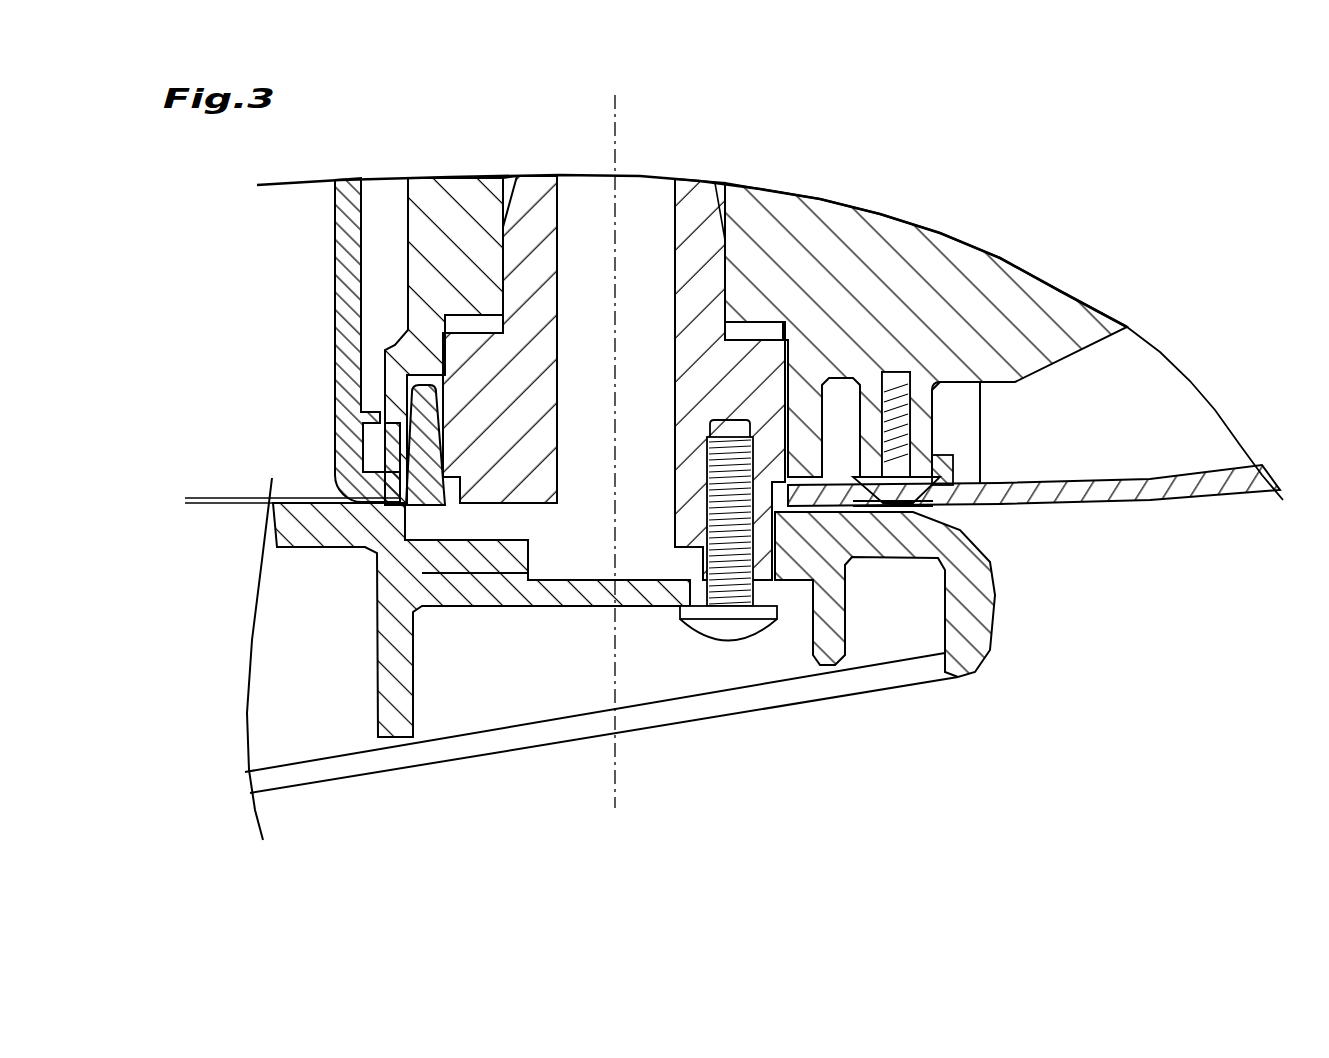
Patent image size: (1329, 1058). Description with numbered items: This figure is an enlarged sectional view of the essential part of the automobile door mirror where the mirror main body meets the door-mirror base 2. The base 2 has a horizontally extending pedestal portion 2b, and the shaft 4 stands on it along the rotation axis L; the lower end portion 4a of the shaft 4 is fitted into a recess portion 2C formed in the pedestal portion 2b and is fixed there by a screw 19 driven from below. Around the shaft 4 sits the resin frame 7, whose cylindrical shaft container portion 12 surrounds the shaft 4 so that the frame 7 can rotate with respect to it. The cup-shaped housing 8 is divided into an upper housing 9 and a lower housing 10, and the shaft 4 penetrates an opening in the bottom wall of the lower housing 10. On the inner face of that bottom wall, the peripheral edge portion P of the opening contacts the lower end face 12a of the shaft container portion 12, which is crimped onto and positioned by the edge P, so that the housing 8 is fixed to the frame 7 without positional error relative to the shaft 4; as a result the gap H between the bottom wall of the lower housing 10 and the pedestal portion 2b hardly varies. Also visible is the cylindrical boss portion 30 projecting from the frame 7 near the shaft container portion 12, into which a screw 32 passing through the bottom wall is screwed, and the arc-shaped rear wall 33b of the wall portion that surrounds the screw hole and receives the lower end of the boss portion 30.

The door-mirror base 2 is at (682, 652).
The pedestal portion 2b is at (975, 626).
The recess portion 2C is at (583, 565).
The shaft 4 is at (700, 208).
The lower end portion 4a is at (490, 575).
The frame 7 is at (948, 277).
The housing 8 is at (746, 384).
The upper housing 9 is at (345, 325).
The lower housing 10 is at (1197, 505).
The shaft container portion 12 is at (428, 242).
The lower end face 12a is at (383, 472).
The peripheral edge portion P is at (641, 474).
The gap H is at (178, 470).
The screw 19 is at (720, 515).
The boss portion 30 is at (925, 402).
The screw 32 is at (905, 432).
The rear wall 33b is at (950, 475).
The rotation axis L is at (628, 776).